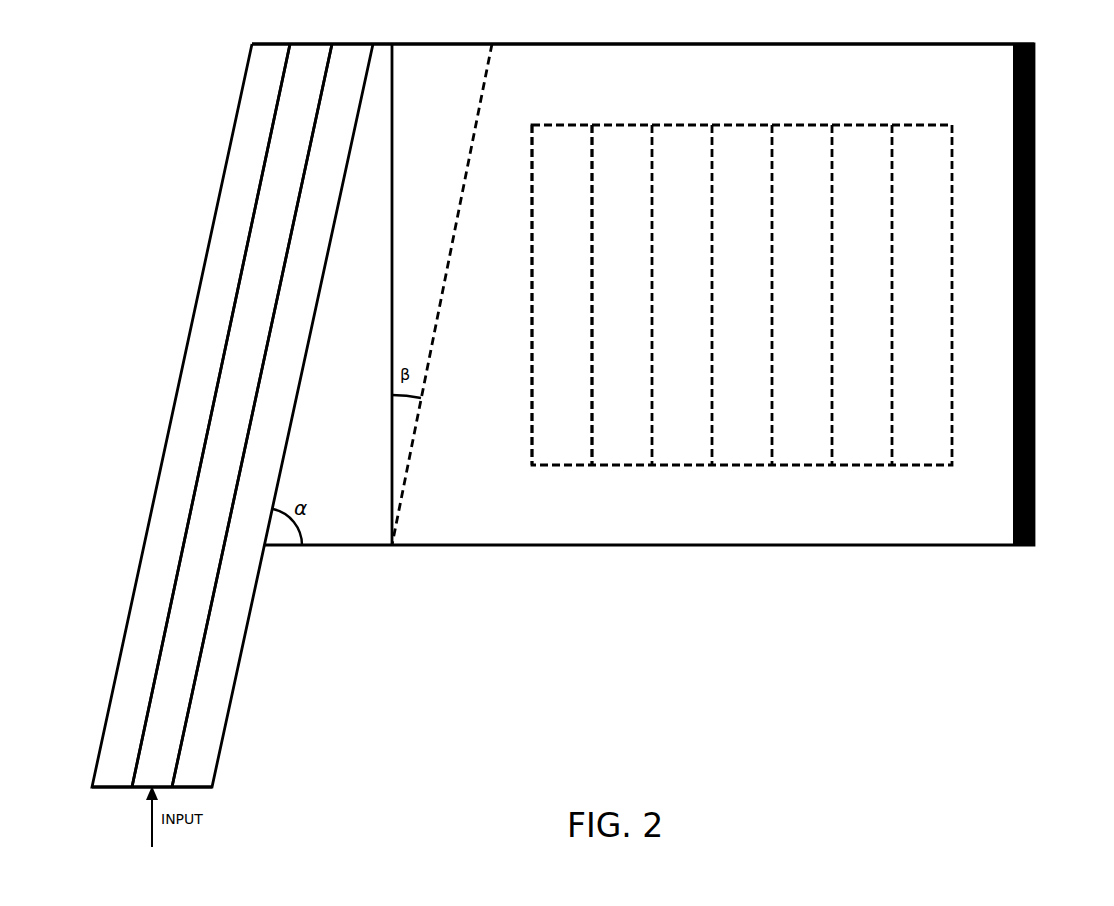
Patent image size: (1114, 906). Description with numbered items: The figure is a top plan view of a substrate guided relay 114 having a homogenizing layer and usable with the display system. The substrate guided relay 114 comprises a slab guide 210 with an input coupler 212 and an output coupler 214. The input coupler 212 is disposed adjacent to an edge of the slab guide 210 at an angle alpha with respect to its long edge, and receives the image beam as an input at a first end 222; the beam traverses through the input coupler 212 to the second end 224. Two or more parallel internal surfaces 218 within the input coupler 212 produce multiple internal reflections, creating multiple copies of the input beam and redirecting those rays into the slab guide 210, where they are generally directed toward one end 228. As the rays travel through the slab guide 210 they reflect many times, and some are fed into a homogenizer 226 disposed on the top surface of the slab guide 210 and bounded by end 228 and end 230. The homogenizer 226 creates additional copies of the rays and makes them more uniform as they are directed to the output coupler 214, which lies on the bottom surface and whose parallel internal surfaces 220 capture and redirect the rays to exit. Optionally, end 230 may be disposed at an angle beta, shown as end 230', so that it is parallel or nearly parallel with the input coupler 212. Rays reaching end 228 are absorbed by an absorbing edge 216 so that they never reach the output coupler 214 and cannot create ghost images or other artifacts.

The substrate guided relay 114 is at (927, 711).
The slab guide 210 is at (962, 545).
The input coupler 212 is at (226, 725).
The output coupler 214 is at (532, 145).
The absorbing edge 216 is at (1034, 73).
The parallel internal surfaces 218 is at (228, 597).
The parallel internal surfaces 220 is at (564, 245).
The first end 222 is at (110, 787).
The second end 224 is at (351, 44).
The homogenizer 226 is at (702, 294).
The end 228 is at (1034, 325).
The end 230 is at (369, 294).
The end 230' is at (442, 294).